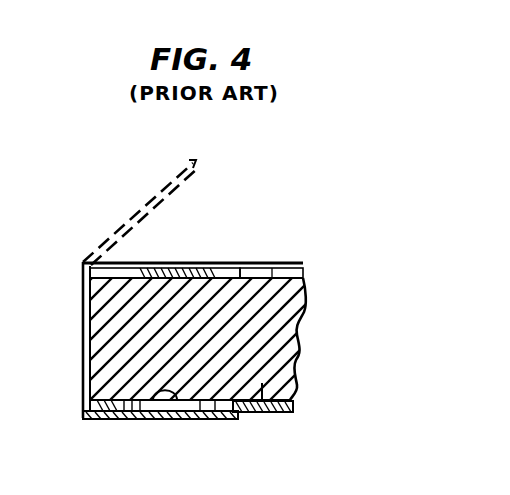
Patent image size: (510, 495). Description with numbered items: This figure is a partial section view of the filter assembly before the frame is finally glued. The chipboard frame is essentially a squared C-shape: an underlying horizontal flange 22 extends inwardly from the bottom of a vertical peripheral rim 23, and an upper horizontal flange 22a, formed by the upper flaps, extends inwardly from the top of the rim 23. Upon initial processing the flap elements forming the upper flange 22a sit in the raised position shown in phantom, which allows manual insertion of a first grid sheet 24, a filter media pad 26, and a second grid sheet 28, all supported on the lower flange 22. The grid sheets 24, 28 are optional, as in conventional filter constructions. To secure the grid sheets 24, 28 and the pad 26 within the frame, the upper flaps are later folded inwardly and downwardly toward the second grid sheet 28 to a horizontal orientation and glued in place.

The underlying horizontal flange 22 is at (151, 420).
The upper horizontal flange 22a is at (160, 263).
The vertical peripheral rim 23 is at (88, 369).
The first grid sheet 24 is at (240, 414).
The filter media pad 26 is at (277, 414).
The second grid sheet 28 is at (260, 266).